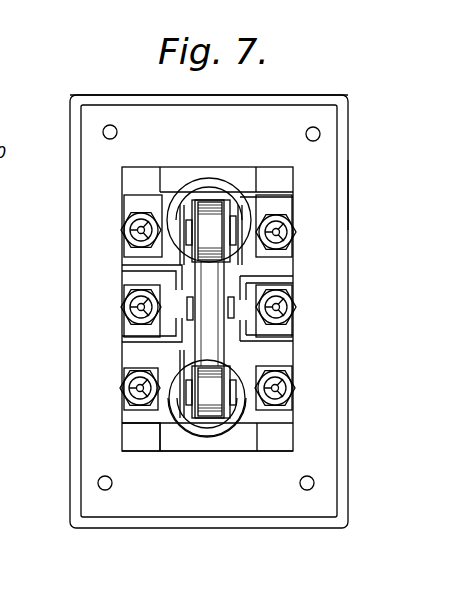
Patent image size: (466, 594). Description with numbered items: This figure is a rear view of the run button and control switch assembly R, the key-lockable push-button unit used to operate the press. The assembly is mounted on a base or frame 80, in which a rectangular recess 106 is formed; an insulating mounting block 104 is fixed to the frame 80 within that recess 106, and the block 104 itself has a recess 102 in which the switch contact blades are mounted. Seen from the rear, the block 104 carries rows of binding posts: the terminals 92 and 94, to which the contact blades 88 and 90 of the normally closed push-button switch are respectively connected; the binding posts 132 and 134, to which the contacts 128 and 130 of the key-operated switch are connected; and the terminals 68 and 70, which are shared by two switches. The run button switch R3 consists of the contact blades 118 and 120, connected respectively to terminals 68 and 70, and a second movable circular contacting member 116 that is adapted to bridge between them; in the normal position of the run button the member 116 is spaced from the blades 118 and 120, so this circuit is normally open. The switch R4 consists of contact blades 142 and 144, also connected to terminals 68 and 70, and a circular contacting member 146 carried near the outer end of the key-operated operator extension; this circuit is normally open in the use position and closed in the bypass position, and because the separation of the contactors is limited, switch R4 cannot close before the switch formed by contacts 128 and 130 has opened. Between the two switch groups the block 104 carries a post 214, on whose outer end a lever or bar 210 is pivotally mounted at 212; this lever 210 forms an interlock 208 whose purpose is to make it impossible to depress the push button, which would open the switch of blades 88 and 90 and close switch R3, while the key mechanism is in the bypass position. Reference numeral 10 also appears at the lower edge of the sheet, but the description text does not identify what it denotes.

The receptacle assembly 10 is at (6, 587).
The terminal 68 is at (125, 305).
The terminal 70 is at (292, 306).
The base or frame 80 is at (160, 517).
The contact blade 88 is at (162, 446).
The contact blade 90 is at (293, 345).
The binding post or terminal 92 is at (123, 388).
The binding post or terminal 94 is at (292, 390).
The recess 102 is at (283, 444).
The insulating mounting block 104 is at (267, 446).
The rectangular recess 106 is at (313, 513).
The second movable circular contacting member 116 is at (198, 428).
The contact blade 118 is at (122, 357).
The contact blade 120 is at (283, 417).
The contact 128 is at (252, 200).
The contact 130 is at (122, 276).
The binding post 132 is at (293, 238).
The binding post 134 is at (124, 232).
The contact blade 142 is at (150, 205).
The contact blade 144 is at (288, 262).
The contacting member 146 is at (203, 200).
The interlock 208 is at (183, 398).
The lever or bar 210 is at (122, 336).
The pivot 212 is at (186, 318).
The post 214 is at (284, 278).
The switch assembly R is at (350, 191).
The run button switch R3 is at (222, 430).
The switch R4 is at (183, 197).